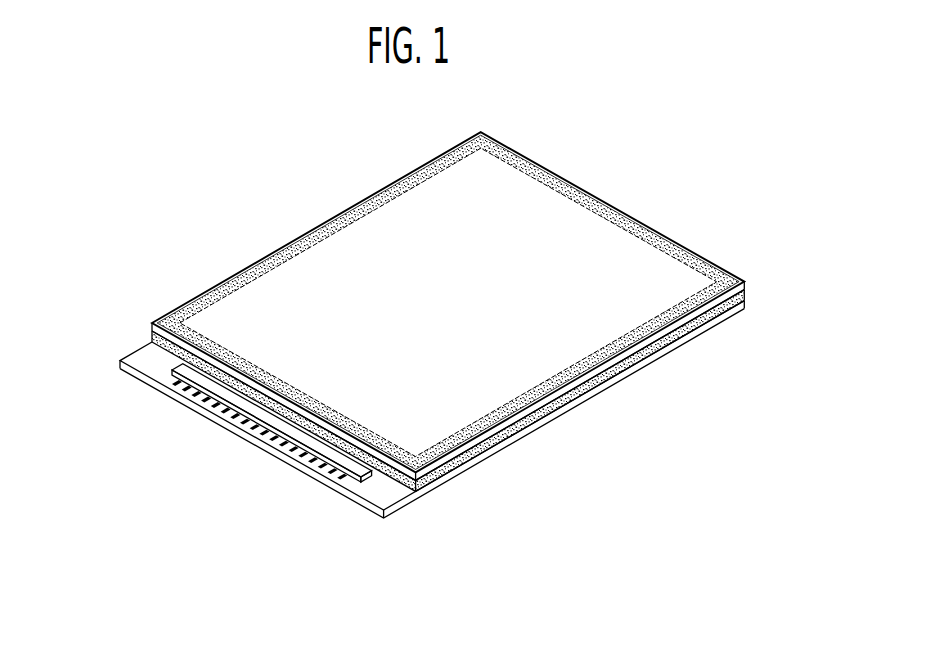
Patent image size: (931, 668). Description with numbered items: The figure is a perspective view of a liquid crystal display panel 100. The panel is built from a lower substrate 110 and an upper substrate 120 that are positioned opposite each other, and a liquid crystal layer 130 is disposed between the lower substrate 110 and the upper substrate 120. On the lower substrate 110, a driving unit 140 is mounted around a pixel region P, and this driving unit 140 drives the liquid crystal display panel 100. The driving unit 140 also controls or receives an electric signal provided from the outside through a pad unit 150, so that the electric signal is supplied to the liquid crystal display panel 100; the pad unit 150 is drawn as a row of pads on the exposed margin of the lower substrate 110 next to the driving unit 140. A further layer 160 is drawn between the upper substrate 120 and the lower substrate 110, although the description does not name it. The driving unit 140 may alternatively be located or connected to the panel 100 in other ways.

The liquid crystal display panel 100 is at (272, 214).
The pixel region P is at (572, 236).
The lower substrate 110 is at (744, 306).
The upper substrate 120 is at (744, 285).
The liquid crystal layer 130 is at (620, 260).
The driving unit 140 is at (183, 368).
The pad unit 150 is at (166, 378).
The intermediate layer 160 is at (744, 295).